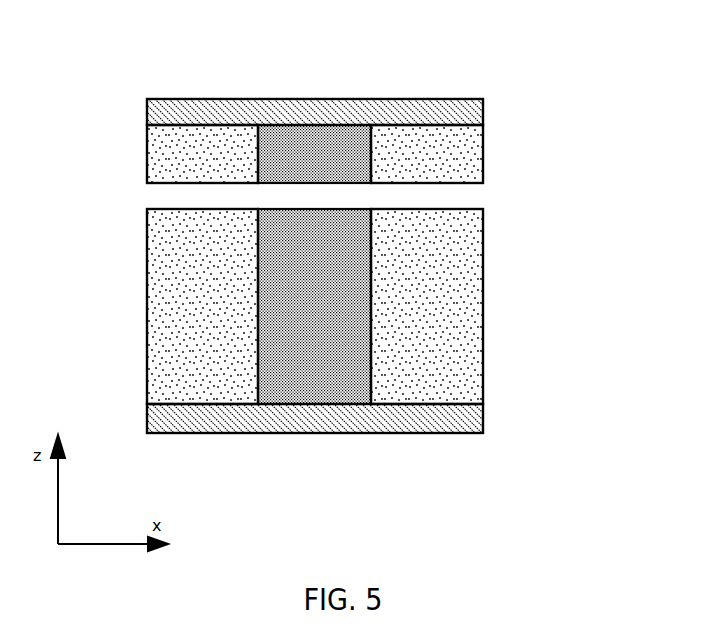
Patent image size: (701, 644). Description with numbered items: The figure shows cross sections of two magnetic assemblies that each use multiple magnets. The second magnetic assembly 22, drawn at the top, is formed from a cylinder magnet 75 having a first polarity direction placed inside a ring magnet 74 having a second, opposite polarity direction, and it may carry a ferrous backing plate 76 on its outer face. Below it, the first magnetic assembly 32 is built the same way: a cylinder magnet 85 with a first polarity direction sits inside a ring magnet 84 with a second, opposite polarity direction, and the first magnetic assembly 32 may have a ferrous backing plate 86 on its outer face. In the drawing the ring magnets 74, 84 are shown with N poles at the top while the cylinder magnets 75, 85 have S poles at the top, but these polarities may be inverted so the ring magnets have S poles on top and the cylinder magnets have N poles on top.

The second magnetic assembly 22 is at (266, 108).
The ferrous backing plate 76 is at (225, 97).
The cylinder magnet 75 is at (332, 120).
The ring magnet 74 is at (266, 108).
The first magnetic assembly 32 is at (390, 364).
The ring magnet 84 is at (364, 364).
The cylinder magnet 85 is at (285, 404).
The ferrous backing plate 86 is at (373, 433).